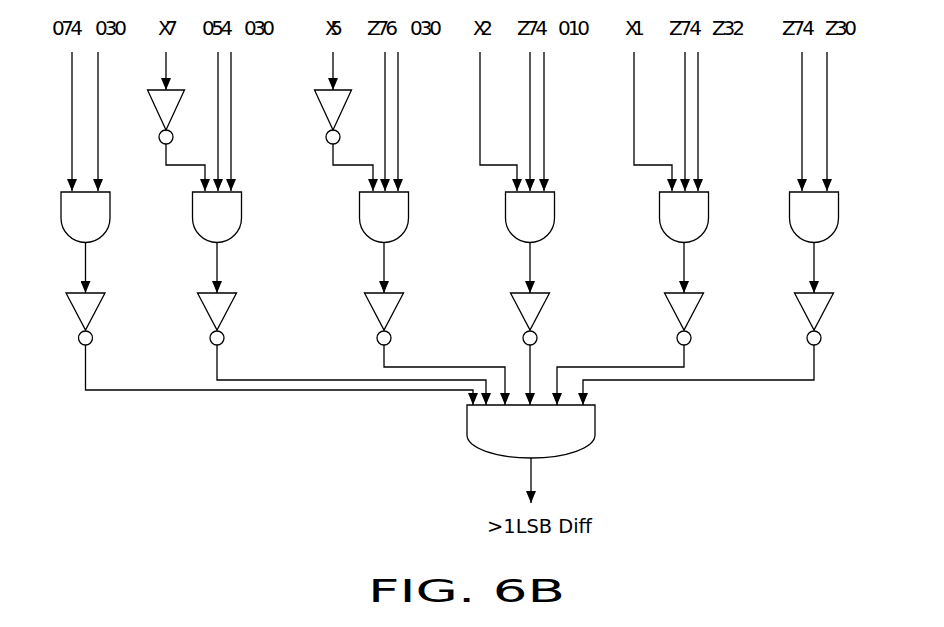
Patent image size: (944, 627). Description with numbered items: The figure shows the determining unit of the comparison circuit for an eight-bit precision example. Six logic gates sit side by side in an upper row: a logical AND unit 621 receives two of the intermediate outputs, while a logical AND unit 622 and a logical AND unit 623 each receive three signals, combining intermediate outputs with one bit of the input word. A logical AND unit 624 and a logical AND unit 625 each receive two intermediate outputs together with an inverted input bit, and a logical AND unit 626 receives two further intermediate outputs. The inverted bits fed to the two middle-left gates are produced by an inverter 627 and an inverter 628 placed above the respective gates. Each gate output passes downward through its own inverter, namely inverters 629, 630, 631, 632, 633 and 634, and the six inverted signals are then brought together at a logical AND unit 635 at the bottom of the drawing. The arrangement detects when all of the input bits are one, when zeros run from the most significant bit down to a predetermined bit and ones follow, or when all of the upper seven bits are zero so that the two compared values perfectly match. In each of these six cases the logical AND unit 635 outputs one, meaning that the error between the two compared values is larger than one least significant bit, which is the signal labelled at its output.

The logical AND unit 621 is at (838, 218).
The logical AND unit 622 is at (708, 218).
The logical AND unit 623 is at (554, 218).
The logical AND unit 624 is at (408, 218).
The logical AND unit 625 is at (242, 218).
The logical AND unit 626 is at (110, 218).
The inverter 627 is at (322, 112).
The inverter 628 is at (155, 112).
The inverter 629 is at (825, 314).
The inverter 630 is at (695, 314).
The inverter 631 is at (541, 314).
The inverter 632 is at (395, 314).
The inverter 633 is at (228, 314).
The inverter 634 is at (96, 314).
The logical AND unit 635 is at (594, 440).